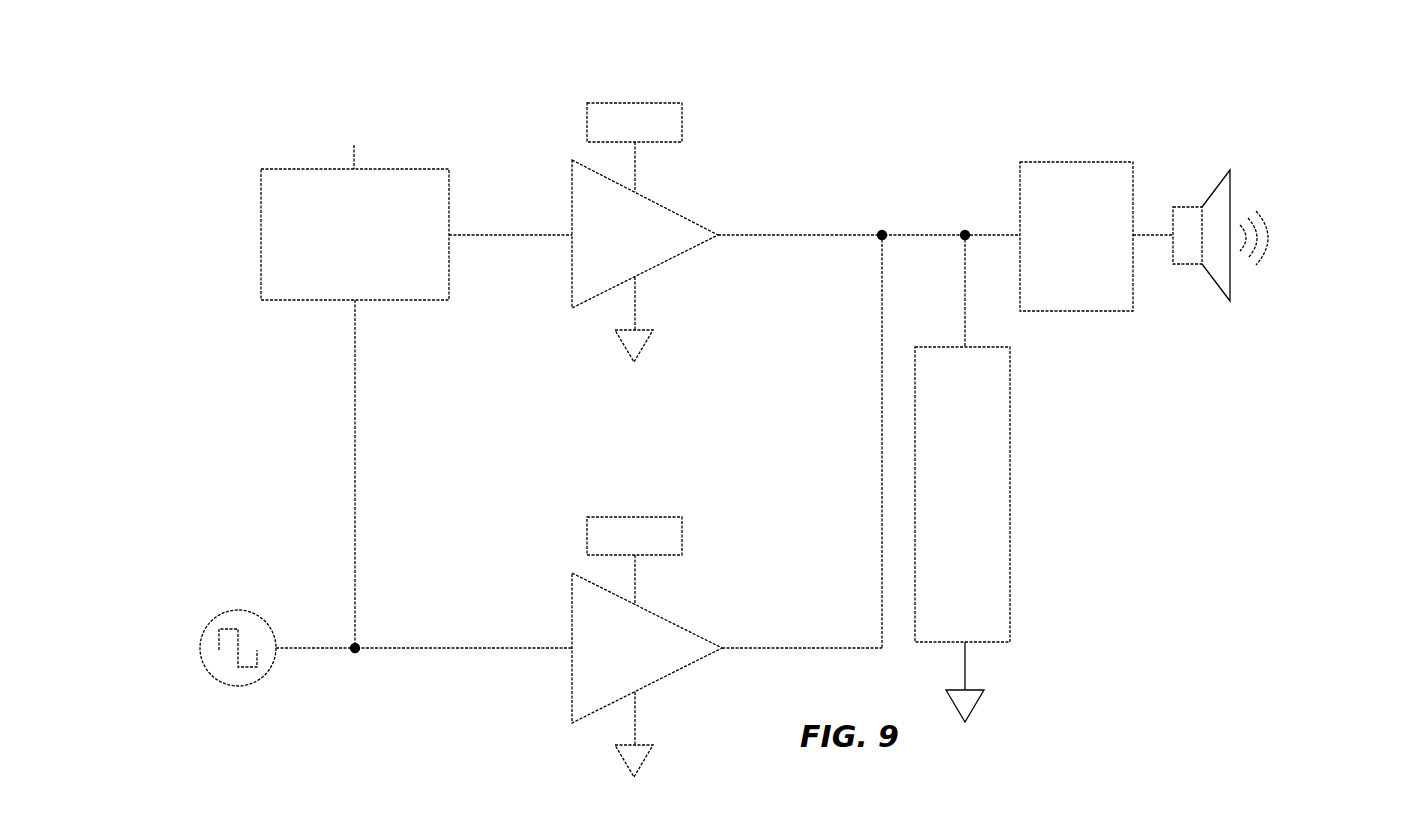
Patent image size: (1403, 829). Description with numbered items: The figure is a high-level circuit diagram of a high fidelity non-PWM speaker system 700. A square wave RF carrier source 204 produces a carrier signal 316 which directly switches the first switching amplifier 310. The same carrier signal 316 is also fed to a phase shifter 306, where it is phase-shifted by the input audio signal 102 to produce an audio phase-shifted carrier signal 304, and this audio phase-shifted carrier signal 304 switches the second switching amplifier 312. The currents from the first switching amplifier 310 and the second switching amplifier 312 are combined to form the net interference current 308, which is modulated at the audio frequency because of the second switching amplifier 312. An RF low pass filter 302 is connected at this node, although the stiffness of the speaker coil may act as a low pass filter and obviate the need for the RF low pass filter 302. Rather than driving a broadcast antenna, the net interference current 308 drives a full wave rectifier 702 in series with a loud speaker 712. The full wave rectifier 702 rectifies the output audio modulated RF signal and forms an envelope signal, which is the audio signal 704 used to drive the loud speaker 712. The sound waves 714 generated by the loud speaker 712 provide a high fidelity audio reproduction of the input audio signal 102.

The high fidelity non-PWM speaker system 700 is at (250, 435).
The input audio signal 102 is at (353, 126).
The phase shifter 306 is at (355, 234).
The audio phase-shifted carrier signal 304 is at (526, 234).
The second switching amplifier 312 is at (645, 248).
The net interference current 308 is at (881, 246).
The full wave rectifier 702 is at (1076, 236).
The audio signal 704 is at (1145, 234).
The loud speaker 712 is at (1215, 258).
The sound waves 714 is at (1303, 217).
The RF low pass filter 302 is at (962, 554).
The square wave RF carrier source 204 is at (199, 648).
The carrier signal 316 is at (356, 640).
The first switching amplifier 310 is at (727, 662).